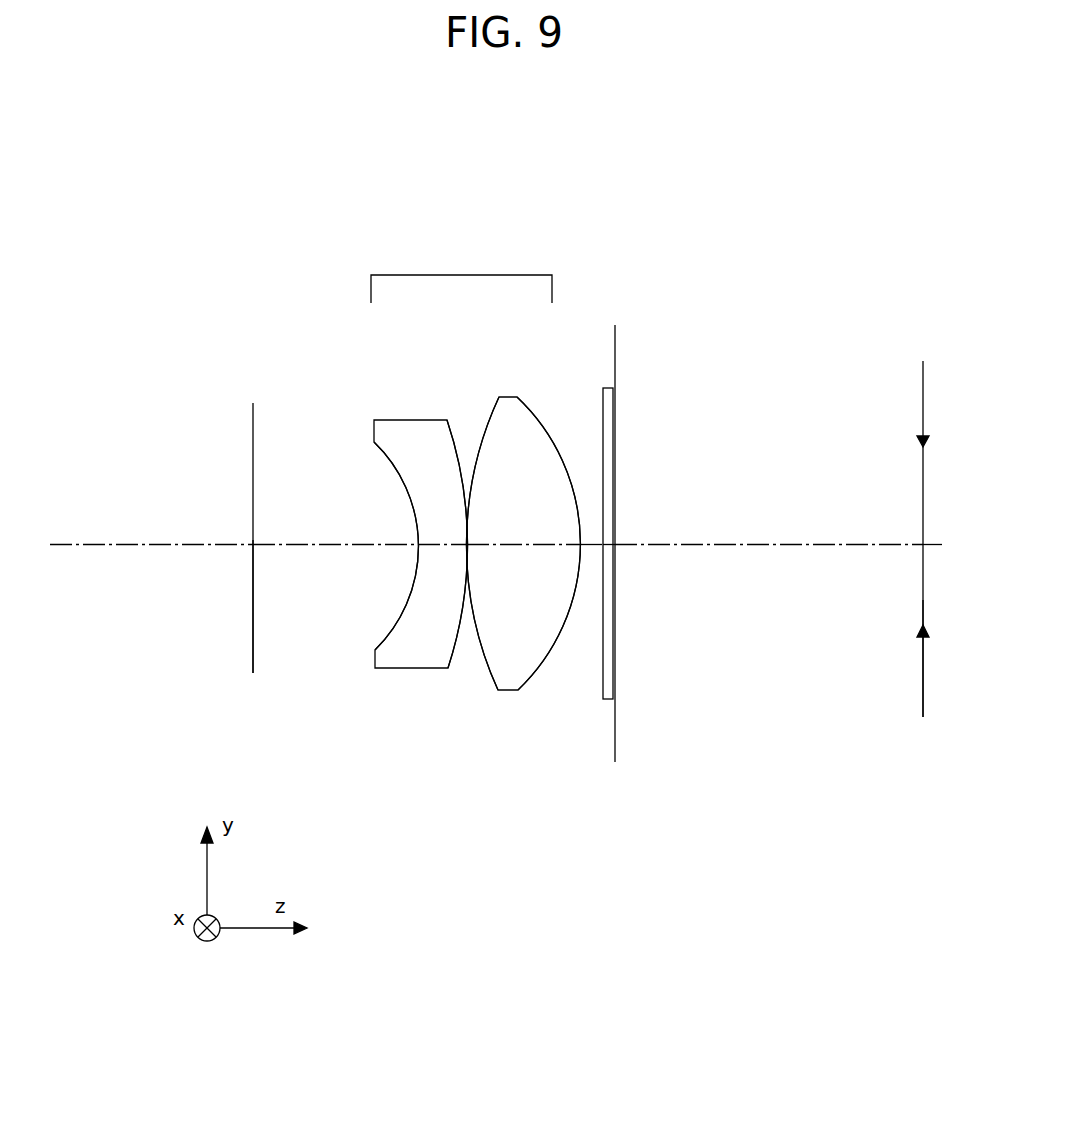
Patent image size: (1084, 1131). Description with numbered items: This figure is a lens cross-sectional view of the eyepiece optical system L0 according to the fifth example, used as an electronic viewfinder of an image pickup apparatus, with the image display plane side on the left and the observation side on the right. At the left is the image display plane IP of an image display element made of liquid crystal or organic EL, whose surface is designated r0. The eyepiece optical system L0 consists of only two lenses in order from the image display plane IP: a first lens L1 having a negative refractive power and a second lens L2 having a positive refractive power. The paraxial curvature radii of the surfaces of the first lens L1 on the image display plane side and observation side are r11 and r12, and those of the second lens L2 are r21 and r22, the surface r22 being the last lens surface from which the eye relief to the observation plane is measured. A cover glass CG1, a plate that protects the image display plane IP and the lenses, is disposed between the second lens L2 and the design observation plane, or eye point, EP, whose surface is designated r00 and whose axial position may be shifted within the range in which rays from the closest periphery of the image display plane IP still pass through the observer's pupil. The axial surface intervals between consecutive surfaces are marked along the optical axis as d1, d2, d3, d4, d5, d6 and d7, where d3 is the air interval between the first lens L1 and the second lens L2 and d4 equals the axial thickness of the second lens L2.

The image display plane IP is at (252, 439).
The eyepiece optical system L0 is at (461, 270).
The first lens L1 is at (400, 433).
The second lens L2 is at (504, 409).
The cover glass CG1 is at (608, 390).
The observation plane (eye point) EP is at (938, 539).
The display panel surface r0 is at (253, 673).
The paraxial curvature radius of image-display-plane-side surface of first lens r11 is at (386, 636).
The paraxial curvature radius of observation-side surface of first lens r12 is at (450, 645).
The paraxial curvature radius of image-display-plane-side surface of second lens r21 is at (490, 657).
The paraxial curvature radius of observation-side surface of second lens r22 is at (539, 665).
The observation plane surface r00 is at (922, 660).
The axial surface interval d1 is at (335, 561).
The axial surface interval d2 is at (442, 560).
The axial surface interval d3 is at (467, 546).
The axial surface interval d4 is at (523, 560).
The axial surface interval d5 is at (590, 547).
The axial surface interval d6 is at (616, 560).
The axial surface interval d7 is at (769, 561).